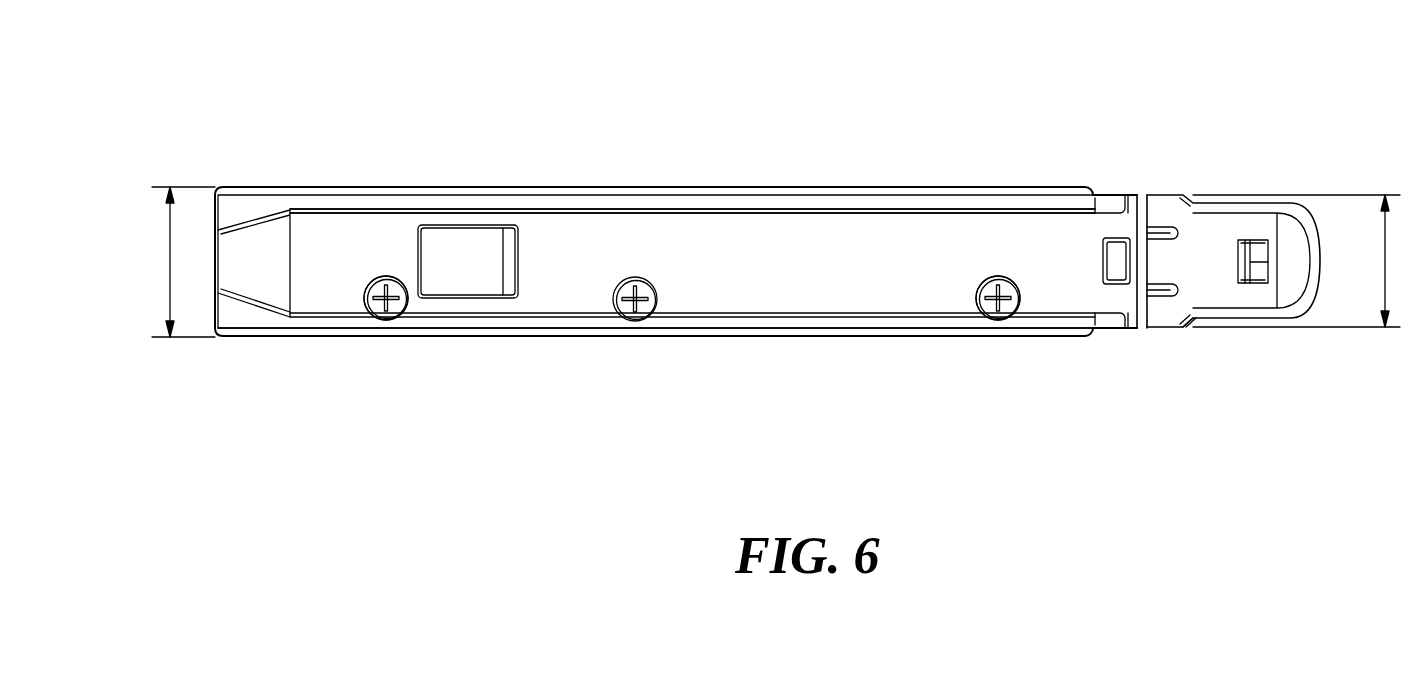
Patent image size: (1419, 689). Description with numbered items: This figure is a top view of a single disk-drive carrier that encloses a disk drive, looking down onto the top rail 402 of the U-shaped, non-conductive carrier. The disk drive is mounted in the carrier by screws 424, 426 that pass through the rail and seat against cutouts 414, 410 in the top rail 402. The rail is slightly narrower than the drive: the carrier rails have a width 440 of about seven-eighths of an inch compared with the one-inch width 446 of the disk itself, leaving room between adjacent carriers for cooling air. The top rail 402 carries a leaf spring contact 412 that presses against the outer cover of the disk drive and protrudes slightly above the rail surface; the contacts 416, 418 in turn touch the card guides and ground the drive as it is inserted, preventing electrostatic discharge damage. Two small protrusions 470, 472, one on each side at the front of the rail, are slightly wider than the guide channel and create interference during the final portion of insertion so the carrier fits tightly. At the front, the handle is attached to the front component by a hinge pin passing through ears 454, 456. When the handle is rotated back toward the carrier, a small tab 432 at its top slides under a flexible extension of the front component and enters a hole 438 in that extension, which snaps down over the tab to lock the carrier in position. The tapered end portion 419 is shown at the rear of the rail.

The top rail 402 is at (682, 262).
The cutout 410 is at (1004, 272).
The leaf spring contact 412 is at (498, 252).
The cutout 414 is at (388, 277).
The contact 416 is at (645, 208).
The contact 418 is at (505, 328).
The tapered end portion 419 is at (253, 307).
The screw 424 is at (397, 323).
The screw 426 is at (1012, 300).
The tab 432 is at (1267, 242).
The hole 438 is at (1243, 262).
The width 440 is at (1299, 261).
The width 446 is at (181, 262).
The ear 454 is at (1192, 327).
The ear 456 is at (1181, 200).
The protrusion 470 is at (1096, 320).
The protrusion 472 is at (1085, 203).